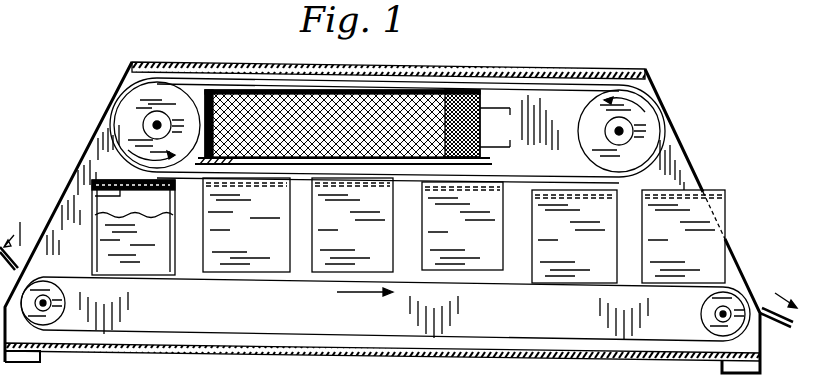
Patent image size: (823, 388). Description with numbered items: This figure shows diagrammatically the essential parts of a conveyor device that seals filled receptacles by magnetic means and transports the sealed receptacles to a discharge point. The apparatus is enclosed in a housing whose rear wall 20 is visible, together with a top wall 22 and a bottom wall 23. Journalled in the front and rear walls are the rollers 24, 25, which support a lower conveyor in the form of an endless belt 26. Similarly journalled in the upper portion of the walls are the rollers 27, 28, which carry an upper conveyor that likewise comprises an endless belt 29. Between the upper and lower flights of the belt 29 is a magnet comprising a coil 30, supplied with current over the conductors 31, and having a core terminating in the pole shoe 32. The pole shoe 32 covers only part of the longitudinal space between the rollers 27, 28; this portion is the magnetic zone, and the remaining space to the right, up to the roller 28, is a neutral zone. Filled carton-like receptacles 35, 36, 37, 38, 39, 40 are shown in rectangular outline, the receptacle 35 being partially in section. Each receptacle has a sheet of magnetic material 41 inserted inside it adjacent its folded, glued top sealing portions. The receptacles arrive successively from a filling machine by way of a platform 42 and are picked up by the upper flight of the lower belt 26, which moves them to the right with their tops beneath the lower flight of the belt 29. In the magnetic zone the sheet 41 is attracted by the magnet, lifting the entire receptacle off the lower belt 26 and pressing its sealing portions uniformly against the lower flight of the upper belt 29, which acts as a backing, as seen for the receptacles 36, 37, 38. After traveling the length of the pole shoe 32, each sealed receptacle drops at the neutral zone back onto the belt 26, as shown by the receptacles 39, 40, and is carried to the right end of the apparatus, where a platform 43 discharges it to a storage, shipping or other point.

The rear wall 20 is at (682, 160).
The top wall 22 is at (562, 69).
The bottom wall 23 is at (598, 360).
The roller 24 is at (58, 318).
The roller 25 is at (710, 322).
The endless belt 26 is at (190, 285).
The roller 27 is at (130, 100).
The roller 28 is at (655, 124).
The endless belt 29 is at (512, 84).
The coil 30 is at (420, 100).
The conductors 31 is at (502, 111).
The pole shoe 32 is at (480, 164).
The receptacle 35 is at (133, 227).
The receptacle 36 is at (246, 225).
The receptacle 37 is at (352, 225).
The receptacle 38 is at (462, 226).
The receptacle 39 is at (574, 236).
The receptacle 40 is at (683, 236).
The sheet of magnetic material 41 is at (94, 198).
The platform 42 is at (12, 237).
The platform 43 is at (764, 302).